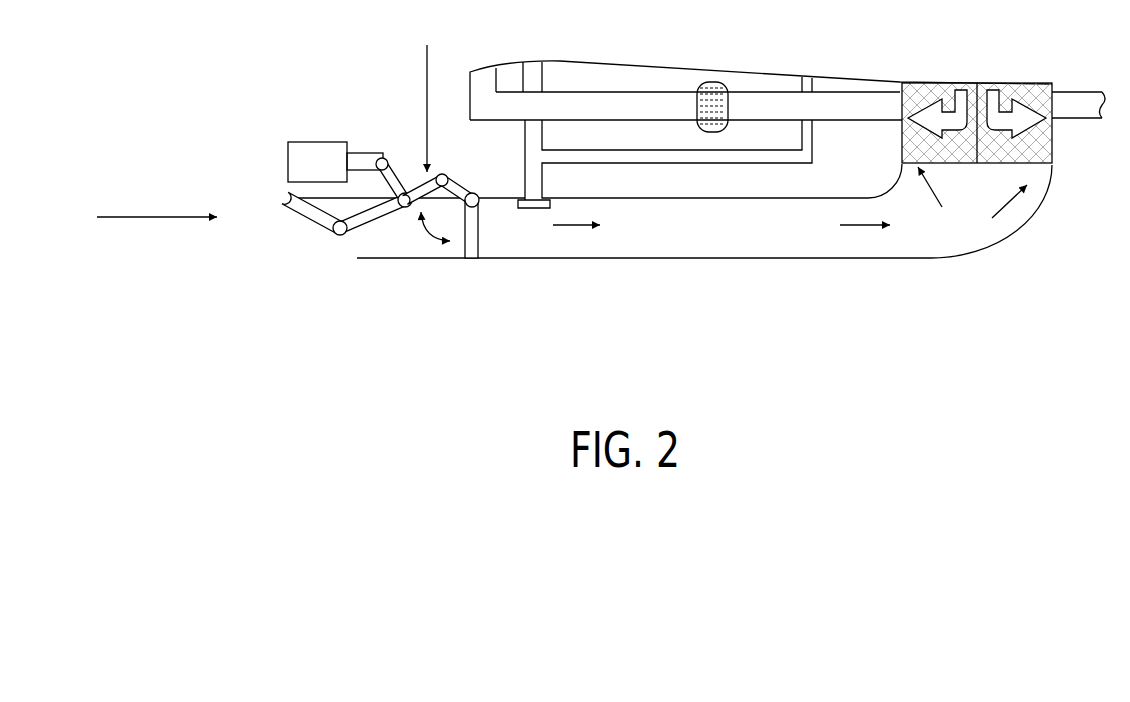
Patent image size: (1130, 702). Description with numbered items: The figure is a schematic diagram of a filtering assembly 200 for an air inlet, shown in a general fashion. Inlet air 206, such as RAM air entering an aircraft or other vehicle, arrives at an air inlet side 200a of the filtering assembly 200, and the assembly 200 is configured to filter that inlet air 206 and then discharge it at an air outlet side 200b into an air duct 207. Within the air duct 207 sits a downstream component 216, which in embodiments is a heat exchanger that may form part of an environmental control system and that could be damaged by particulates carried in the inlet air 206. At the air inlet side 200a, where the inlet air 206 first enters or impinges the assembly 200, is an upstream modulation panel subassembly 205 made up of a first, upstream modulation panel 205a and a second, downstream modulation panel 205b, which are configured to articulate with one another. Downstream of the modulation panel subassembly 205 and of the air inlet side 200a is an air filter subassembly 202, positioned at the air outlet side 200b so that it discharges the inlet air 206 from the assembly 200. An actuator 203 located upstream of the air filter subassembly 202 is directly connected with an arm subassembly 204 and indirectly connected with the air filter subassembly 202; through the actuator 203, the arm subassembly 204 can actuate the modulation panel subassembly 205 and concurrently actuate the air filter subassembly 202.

The filtering assembly 200 is at (320, 95).
The air inlet side 200a is at (285, 218).
The air outlet side 200b is at (492, 225).
The air filter subassembly 202 is at (475, 260).
The actuator 203 is at (273, 155).
The arm subassembly 204 is at (425, 53).
The modulation panel subassembly 205 is at (322, 242).
The first modulation panel 205a is at (310, 225).
The second modulation panel 205b is at (373, 223).
The inlet air 206 is at (117, 215).
The air duct 207 is at (765, 243).
The component 216 is at (1038, 150).